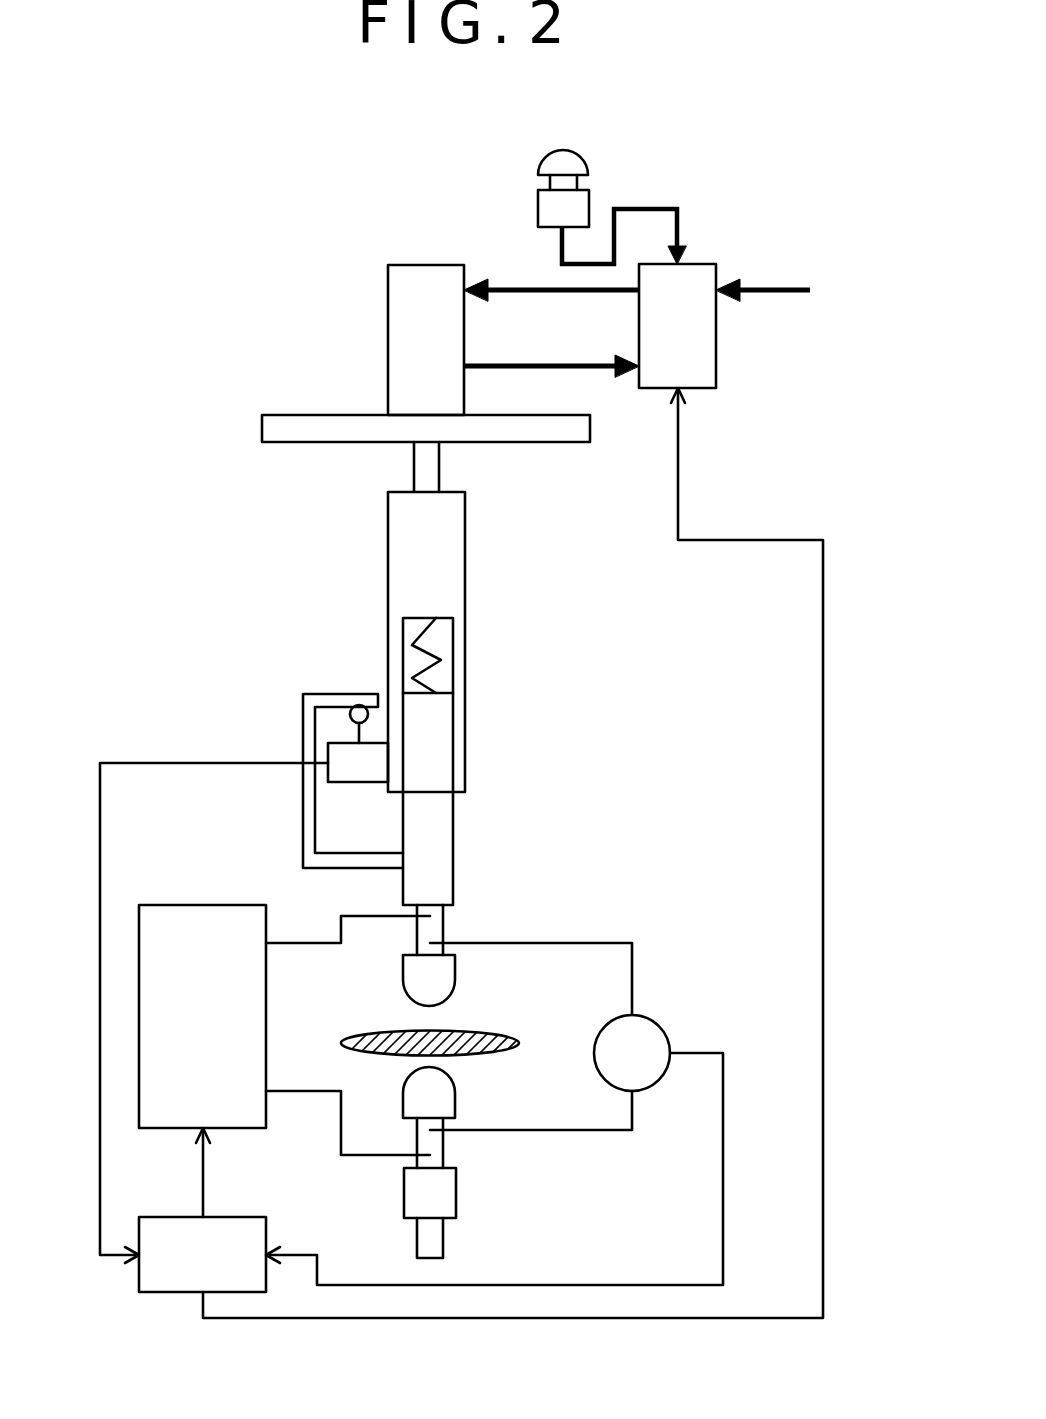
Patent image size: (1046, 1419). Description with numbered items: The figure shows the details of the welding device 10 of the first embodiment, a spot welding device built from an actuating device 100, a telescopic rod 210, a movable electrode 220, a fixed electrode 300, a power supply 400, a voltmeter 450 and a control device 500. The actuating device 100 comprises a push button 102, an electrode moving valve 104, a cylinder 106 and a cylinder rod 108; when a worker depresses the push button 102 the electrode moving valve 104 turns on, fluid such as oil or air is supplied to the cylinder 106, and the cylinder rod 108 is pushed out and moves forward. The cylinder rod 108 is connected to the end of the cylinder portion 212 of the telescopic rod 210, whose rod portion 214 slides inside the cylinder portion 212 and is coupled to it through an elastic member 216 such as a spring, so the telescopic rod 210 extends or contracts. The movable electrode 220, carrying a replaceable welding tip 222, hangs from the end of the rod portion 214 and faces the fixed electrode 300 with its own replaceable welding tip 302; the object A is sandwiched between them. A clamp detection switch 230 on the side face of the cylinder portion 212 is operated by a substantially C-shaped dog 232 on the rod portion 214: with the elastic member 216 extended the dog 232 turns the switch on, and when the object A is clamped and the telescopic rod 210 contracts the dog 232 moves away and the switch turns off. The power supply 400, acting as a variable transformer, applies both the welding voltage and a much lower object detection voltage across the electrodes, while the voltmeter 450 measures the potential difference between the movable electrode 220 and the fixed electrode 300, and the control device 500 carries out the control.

The welding device 10 is at (190, 187).
The actuating device 100 is at (428, 235).
The push button 102 is at (563, 150).
The electrode moving valve 104 is at (705, 263).
The cylinder 106 is at (400, 320).
The cylinder rod 108 is at (427, 471).
The telescopic rod 210 is at (592, 663).
The cylinder portion 212 is at (445, 535).
The rod portion 214 is at (433, 835).
The elastic member 216 is at (437, 658).
The movable electrode 220 is at (459, 925).
The welding tip 222 is at (440, 982).
The clamp detection switch 230 is at (340, 743).
The dog 232 is at (356, 705).
The fixed electrode 300 is at (458, 1152).
The welding tip 302 is at (440, 1095).
The power supply 400 is at (203, 904).
The voltmeter 450 is at (653, 1022).
The control device 500 is at (150, 1216).
The object A is at (517, 1043).